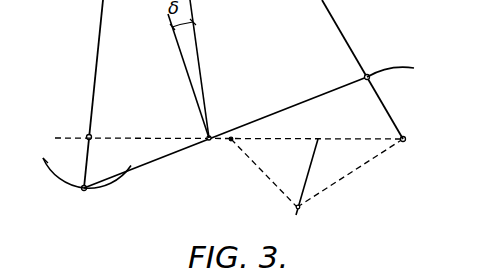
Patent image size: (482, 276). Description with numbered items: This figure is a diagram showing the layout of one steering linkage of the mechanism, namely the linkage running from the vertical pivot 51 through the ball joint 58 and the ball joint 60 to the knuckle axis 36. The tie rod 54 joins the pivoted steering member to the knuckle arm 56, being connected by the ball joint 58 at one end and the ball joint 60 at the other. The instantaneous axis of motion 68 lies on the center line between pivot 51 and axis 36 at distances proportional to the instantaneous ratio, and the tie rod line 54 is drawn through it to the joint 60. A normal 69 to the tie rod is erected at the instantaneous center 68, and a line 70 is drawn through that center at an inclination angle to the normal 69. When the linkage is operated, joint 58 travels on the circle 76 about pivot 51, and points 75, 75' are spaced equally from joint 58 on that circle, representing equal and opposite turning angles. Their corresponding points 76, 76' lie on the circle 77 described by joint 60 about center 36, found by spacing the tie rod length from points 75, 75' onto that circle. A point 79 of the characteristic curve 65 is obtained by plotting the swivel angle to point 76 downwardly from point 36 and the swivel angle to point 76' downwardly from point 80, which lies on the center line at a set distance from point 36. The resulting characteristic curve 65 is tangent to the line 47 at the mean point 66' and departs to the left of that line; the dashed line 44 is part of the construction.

The knuckle axis 36 is at (406, 141).
The link 44 is at (350, 170).
The line 47 is at (303, 208).
The vertical pivot 51 is at (87, 134).
The tie rod 54 is at (268, 116).
The knuckle arm 56 is at (388, 109).
The ball joint 58 is at (89, 203).
The ball joint 60 is at (369, 74).
The characteristic curve 65 is at (300, 199).
The mid point 66' is at (308, 123).
The instantaneous axis of motion 68 is at (229, 155).
The normal 69 is at (188, 78).
The line 70 is at (199, 57).
The point 75 is at (63, 163).
The point 75' is at (108, 168).
The circle 76 is at (208, 150).
The point 76' is at (414, 73).
The circle 77 is at (397, 69).
The point of characteristic curve 79 is at (294, 207).
The point 80 is at (234, 141).